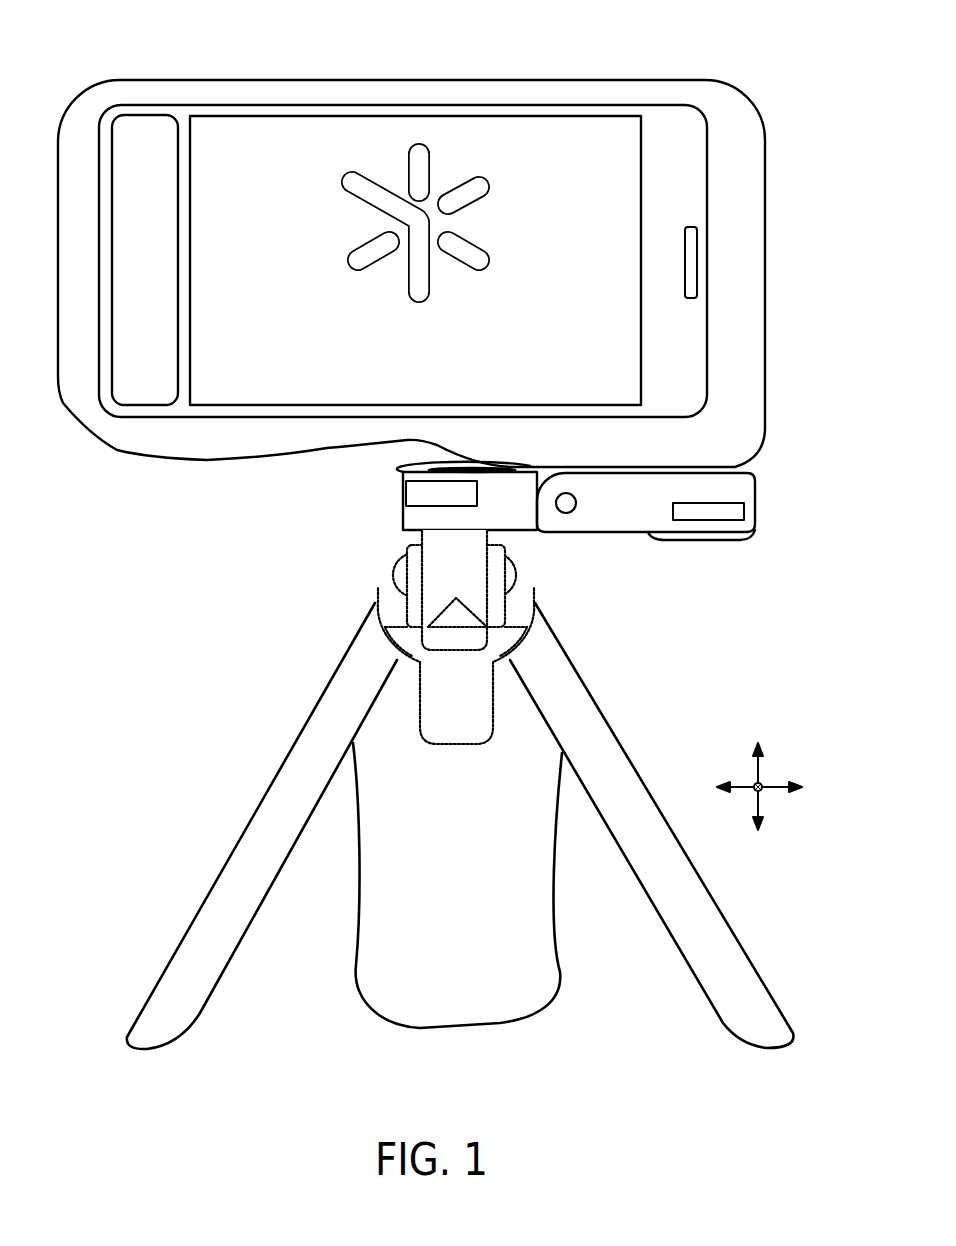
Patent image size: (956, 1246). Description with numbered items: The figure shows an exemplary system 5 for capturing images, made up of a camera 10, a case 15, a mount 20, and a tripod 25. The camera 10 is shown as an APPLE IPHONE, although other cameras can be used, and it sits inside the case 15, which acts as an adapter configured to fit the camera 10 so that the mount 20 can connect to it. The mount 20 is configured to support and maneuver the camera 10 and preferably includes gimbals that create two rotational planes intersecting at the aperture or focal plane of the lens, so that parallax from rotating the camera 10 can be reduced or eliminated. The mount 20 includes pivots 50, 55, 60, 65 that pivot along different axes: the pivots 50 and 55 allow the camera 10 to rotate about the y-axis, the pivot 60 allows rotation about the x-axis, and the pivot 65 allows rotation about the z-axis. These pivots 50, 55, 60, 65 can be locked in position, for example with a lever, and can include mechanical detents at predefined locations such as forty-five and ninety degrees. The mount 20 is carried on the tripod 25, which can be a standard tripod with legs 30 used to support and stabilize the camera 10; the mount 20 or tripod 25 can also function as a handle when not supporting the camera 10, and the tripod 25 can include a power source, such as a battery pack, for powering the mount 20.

The system 5 is at (740, 53).
The camera 10 is at (292, 271).
The case 15 is at (139, 450).
The mount 20 is at (757, 487).
The tripod 25 is at (278, 767).
The legs 30 is at (217, 872).
The pivot 50 is at (702, 541).
The pivot 55 is at (430, 464).
The pivot 60 is at (393, 575).
The pivot 65 is at (566, 513).